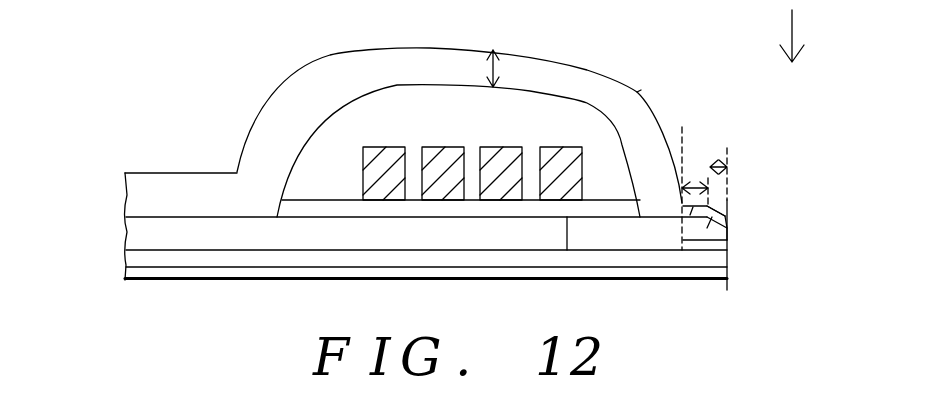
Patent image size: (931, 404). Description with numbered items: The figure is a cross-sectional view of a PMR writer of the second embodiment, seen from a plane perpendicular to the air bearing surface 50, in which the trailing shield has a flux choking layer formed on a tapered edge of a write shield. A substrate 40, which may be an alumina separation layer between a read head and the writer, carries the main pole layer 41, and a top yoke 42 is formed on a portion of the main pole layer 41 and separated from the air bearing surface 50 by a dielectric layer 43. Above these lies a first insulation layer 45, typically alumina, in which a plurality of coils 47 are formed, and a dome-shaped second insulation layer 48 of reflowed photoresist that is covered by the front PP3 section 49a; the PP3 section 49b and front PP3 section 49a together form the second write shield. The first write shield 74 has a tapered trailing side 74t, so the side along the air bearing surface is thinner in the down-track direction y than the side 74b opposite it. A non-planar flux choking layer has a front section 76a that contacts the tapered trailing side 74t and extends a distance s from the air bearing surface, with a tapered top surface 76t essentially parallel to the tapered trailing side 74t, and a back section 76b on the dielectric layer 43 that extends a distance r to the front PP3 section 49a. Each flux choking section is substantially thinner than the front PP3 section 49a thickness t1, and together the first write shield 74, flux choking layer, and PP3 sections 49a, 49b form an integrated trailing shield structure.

The substrate 40 is at (134, 273).
The main pole layer 41 is at (134, 258).
The top yoke 42 is at (134, 232).
The dielectric layer 43 is at (728, 252).
The first insulation layer 45 is at (282, 200).
The coils 47 is at (440, 166).
The second insulation layer 48 is at (380, 100).
The front PP3 section 49a is at (632, 97).
The PP3 section 49b is at (134, 188).
The air bearing surface 50 is at (728, 153).
The first write shield 74 is at (728, 237).
The tapered trailing side 74t is at (728, 217).
The side opposite the ABS 74b is at (712, 217).
The front section 76a is at (728, 206).
The tapered top surface 76t is at (730, 200).
The back section 76b is at (690, 215).
The PP3 section thickness t1 is at (513, 69).
The back section distance r is at (695, 188).
The front section distance s is at (718, 154).
The down-track direction y is at (792, 50).